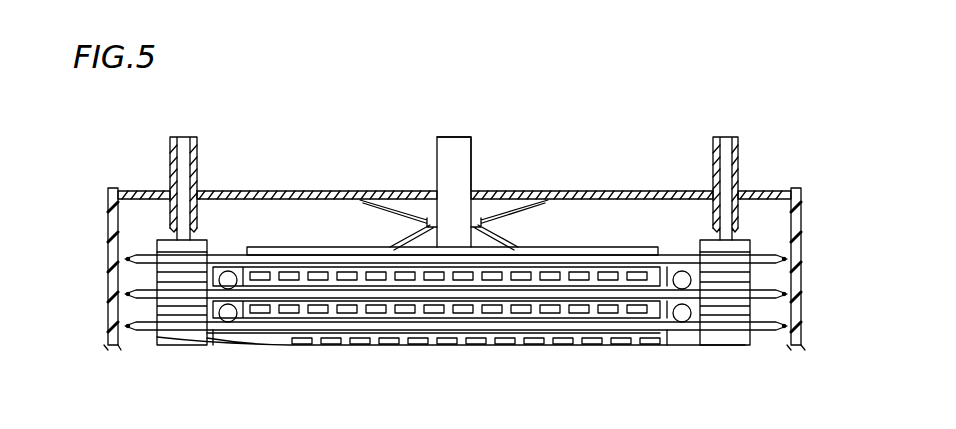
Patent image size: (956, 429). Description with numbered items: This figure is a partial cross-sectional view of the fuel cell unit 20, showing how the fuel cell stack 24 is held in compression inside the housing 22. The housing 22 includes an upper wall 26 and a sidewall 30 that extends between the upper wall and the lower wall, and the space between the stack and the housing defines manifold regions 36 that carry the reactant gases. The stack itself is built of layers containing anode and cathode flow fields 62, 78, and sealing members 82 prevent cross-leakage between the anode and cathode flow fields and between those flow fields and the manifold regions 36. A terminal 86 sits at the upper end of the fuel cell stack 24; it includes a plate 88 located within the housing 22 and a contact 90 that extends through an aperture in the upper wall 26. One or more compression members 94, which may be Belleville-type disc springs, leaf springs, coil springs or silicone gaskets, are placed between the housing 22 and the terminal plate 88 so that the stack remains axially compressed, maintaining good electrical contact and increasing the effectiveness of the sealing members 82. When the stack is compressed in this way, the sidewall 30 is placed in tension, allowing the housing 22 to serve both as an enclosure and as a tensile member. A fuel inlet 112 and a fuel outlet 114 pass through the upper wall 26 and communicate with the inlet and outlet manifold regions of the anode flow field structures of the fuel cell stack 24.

The fuel cell unit 20 is at (624, 72).
The housing 22 is at (102, 212).
The fuel cell stack 24 is at (148, 346).
The upper wall 26 is at (268, 191).
The sidewall 30 is at (801, 244).
The manifold regions 36 is at (140, 279).
The anode flow field 62 is at (670, 260).
The cathode flow field 78 is at (590, 310).
The sealing members 82 is at (690, 322).
The terminal 86 is at (461, 131).
The plate 88 is at (557, 246).
The contact 90 is at (472, 145).
The compression members 94 is at (414, 207).
The fuel inlet 112 is at (170, 165).
The fuel outlet 114 is at (739, 151).